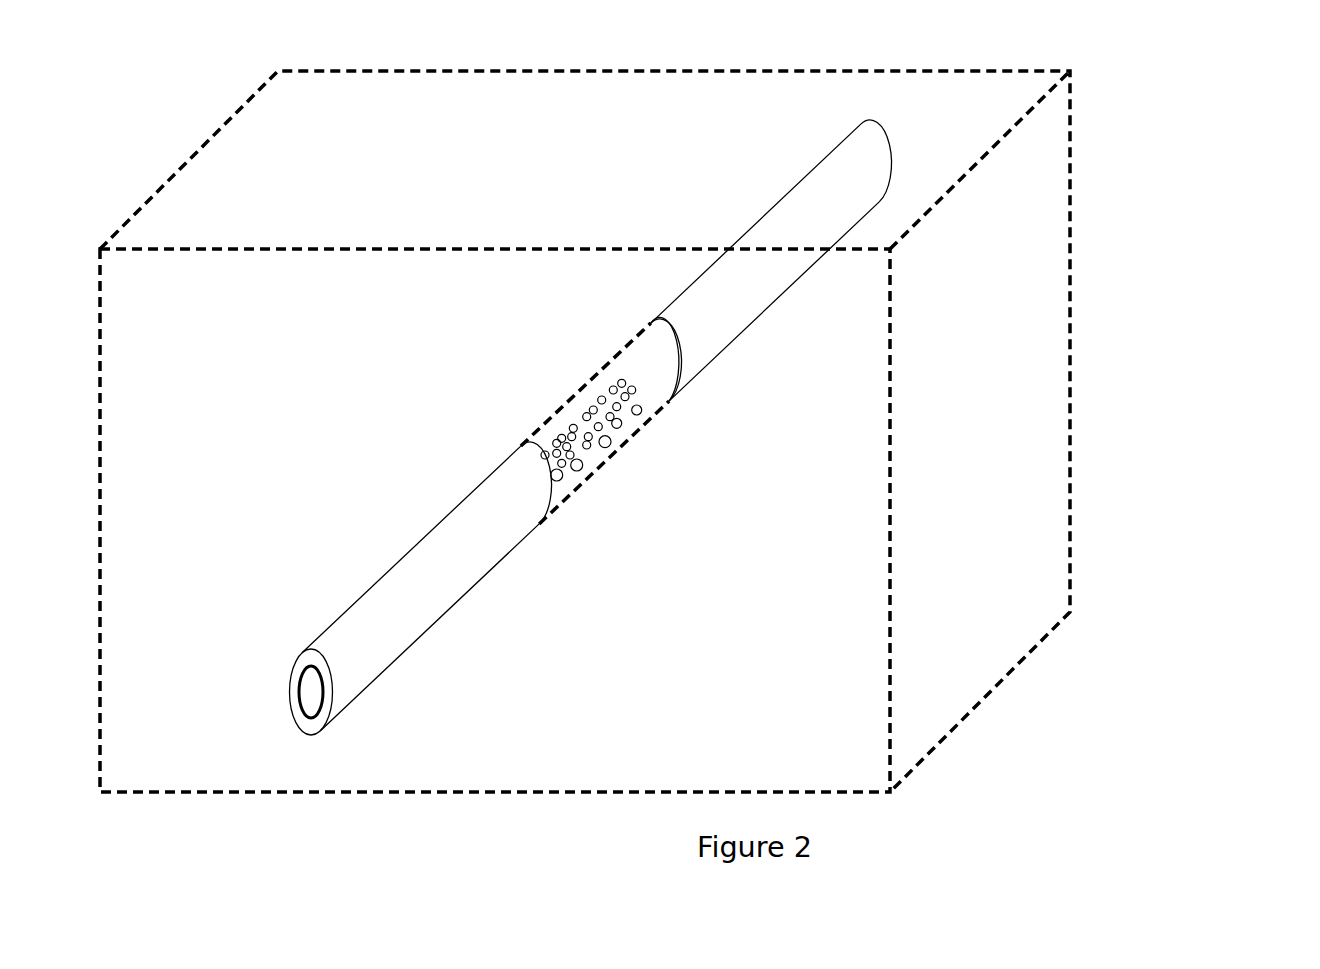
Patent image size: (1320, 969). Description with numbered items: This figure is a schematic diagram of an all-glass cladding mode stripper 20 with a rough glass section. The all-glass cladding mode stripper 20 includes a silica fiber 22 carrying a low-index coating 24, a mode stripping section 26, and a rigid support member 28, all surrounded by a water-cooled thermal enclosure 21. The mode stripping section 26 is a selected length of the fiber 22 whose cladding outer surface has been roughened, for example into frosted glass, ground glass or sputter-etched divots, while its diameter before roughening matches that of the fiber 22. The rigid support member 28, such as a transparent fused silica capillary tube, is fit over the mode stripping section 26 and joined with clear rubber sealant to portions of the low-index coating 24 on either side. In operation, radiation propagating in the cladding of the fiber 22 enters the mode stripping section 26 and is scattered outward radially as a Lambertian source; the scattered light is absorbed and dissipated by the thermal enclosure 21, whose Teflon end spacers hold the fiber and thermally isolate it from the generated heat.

The all-glass cladding mode stripper 20 is at (1183, 223).
The water-cooled thermal enclosure 21 is at (1042, 465).
The silica fiber 22 is at (296, 698).
The low-index coating 24 is at (380, 613).
The mode stripping section 26 is at (593, 387).
The rigid support member 28 is at (632, 348).